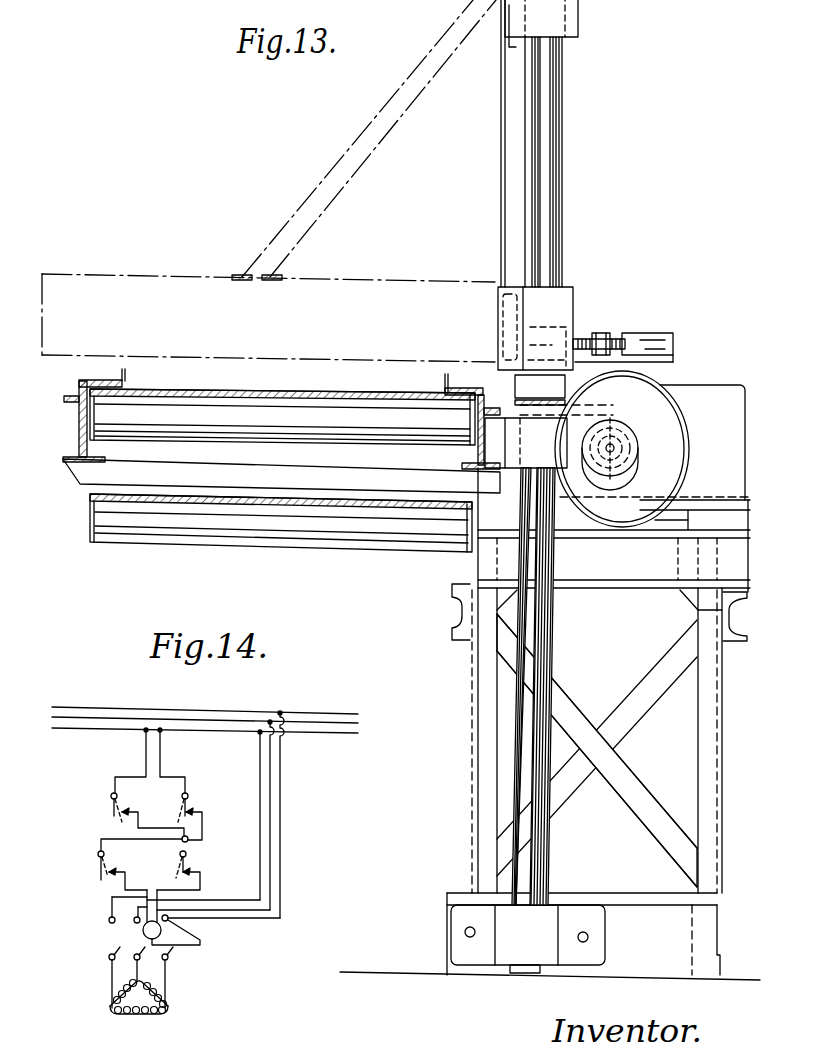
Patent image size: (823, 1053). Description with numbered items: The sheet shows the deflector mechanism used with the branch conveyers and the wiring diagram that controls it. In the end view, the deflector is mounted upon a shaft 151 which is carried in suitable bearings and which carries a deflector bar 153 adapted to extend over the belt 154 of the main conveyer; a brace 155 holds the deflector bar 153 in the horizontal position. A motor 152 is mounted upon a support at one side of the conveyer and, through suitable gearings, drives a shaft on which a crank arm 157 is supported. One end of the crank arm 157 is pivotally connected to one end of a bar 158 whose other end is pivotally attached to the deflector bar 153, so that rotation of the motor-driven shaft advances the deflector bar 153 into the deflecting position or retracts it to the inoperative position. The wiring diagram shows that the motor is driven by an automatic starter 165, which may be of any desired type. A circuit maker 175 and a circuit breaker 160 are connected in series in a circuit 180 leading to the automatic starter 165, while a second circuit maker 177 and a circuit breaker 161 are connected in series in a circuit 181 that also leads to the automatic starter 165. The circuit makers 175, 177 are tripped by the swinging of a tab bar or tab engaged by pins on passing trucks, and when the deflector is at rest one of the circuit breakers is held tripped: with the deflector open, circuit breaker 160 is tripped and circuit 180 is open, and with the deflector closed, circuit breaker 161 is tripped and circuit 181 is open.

In FIG. 13, the shaft 151 is at (553, 132).
In FIG. 13, the motor 152 is at (622, 449).
In FIG. 13, the deflector bar 153 is at (268, 318).
In FIG. 13, the belt 154 is at (247, 392).
In FIG. 13, the brace 155 is at (363, 150).
In FIG. 13, the crank arm 157 is at (675, 362).
In FIG. 13, the bar 158 is at (640, 337).
In FIG. 14, the circuit breaker 160 is at (187, 858).
In FIG. 14, the circuit breaker 161 is at (189, 800).
In FIG. 14, the automatic starter 165 is at (130, 1020).
In FIG. 14, the circuit maker 175 is at (111, 800).
In FIG. 14, the circuit maker 177 is at (99, 856).
In FIG. 14, the circuit 180 is at (146, 757).
In FIG. 14, the circuit 181 is at (161, 755).